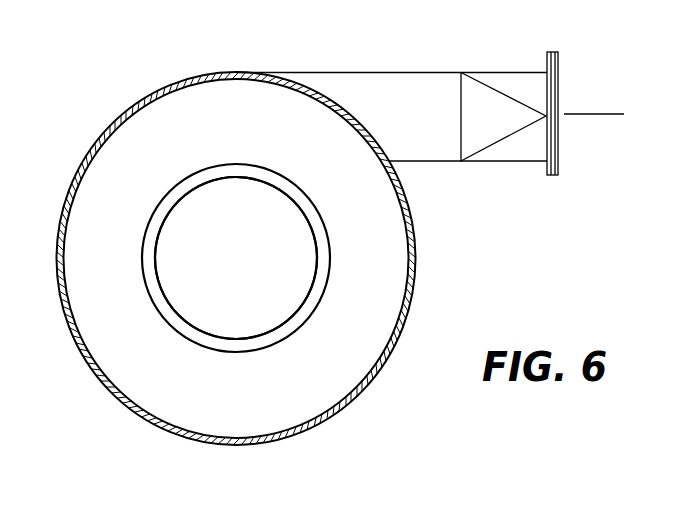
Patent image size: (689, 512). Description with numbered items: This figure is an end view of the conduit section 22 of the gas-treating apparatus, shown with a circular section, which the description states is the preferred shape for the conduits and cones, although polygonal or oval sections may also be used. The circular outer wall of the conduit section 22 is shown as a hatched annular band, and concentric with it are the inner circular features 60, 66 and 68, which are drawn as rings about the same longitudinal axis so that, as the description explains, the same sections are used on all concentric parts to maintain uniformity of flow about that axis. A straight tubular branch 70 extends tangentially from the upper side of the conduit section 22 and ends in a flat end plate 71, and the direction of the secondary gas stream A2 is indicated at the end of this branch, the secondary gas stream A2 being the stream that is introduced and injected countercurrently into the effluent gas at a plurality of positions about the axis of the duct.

The conduit section 22 is at (400, 333).
The inlet opening 60 is at (173, 307).
The annular ring 66 is at (330, 260).
The inner ring wall 68 is at (257, 342).
The discharge duct 70 is at (420, 72).
The flange 71 is at (557, 152).
The secondary gas stream A2 is at (611, 117).